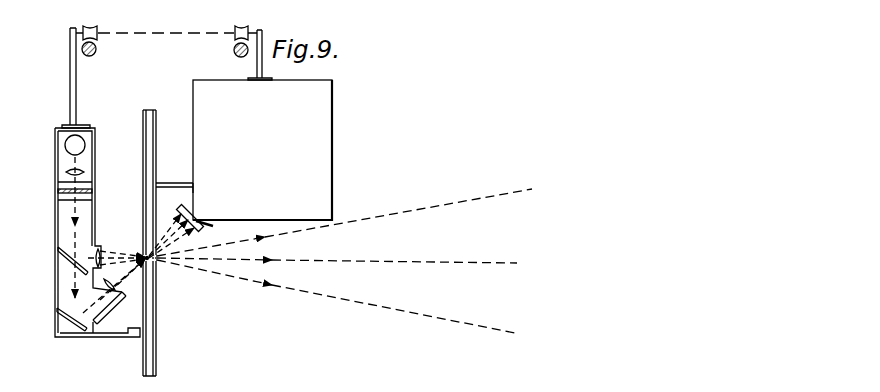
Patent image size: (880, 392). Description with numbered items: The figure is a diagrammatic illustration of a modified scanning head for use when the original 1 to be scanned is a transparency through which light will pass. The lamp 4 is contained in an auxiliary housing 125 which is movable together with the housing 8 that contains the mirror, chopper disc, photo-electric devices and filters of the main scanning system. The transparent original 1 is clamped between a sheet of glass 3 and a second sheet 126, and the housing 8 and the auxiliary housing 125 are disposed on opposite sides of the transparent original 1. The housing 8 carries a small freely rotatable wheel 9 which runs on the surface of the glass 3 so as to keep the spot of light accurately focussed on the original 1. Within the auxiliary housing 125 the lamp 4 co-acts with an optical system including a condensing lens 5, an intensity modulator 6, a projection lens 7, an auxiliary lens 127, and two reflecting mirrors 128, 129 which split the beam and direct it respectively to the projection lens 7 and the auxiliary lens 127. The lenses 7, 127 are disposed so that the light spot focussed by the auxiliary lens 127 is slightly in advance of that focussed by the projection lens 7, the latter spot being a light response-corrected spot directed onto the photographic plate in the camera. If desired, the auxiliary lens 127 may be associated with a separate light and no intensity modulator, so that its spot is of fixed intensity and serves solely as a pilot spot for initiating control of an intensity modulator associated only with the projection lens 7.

The original 1 is at (154, 150).
The sheet of glass 3 is at (157, 112).
The lamp 4 is at (67, 145).
The condensing lens 5 is at (65, 172).
The intensity modulator 6 is at (58, 194).
The projection lens 7 is at (99, 250).
The housing 8 is at (333, 133).
The freely rotatable wheel 9 is at (161, 192).
The auxiliary housing 125 is at (55, 228).
The second sheet 126 is at (143, 123).
The auxiliary lens 127 is at (87, 328).
The reflecting mirror 128 is at (58, 252).
The reflecting mirror 129 is at (57, 316).